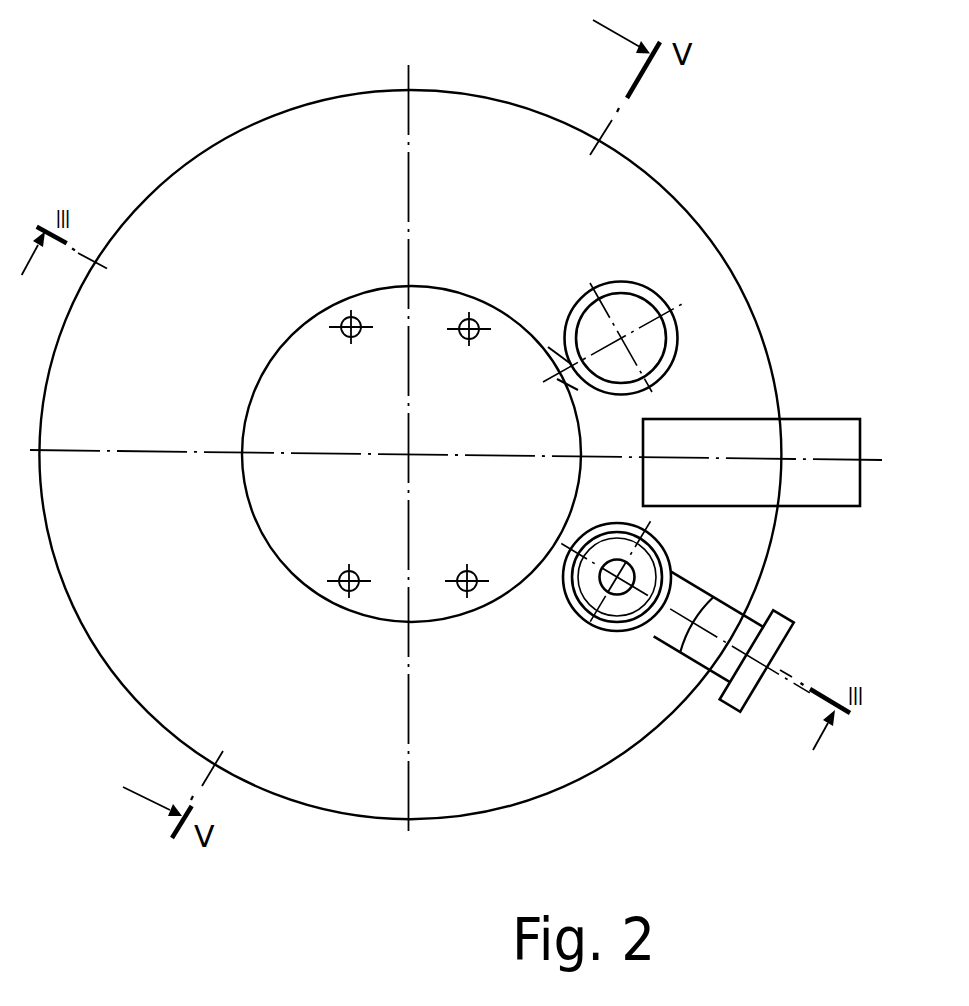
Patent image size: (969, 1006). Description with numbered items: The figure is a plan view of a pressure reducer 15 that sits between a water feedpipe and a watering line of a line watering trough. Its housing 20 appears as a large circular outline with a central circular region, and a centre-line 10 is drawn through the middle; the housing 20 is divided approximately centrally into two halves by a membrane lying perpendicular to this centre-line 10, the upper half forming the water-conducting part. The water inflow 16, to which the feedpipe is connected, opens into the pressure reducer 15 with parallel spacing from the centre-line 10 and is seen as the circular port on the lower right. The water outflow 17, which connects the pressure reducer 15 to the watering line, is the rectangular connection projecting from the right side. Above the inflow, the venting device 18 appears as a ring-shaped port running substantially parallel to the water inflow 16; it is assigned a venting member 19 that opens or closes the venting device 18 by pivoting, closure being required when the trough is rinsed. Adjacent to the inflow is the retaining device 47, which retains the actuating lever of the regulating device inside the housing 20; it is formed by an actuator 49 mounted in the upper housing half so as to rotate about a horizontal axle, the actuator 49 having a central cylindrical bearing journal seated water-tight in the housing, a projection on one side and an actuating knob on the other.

The centre-line 10 is at (409, 455).
The pressure reducer 15 is at (326, 817).
The water inflow 16 is at (611, 632).
The water outflow 17 is at (813, 436).
The venting device 18 is at (651, 292).
The venting member 19 is at (691, 299).
The housing 20 is at (178, 379).
The retaining device 47 is at (757, 611).
The actuator 49 is at (789, 630).